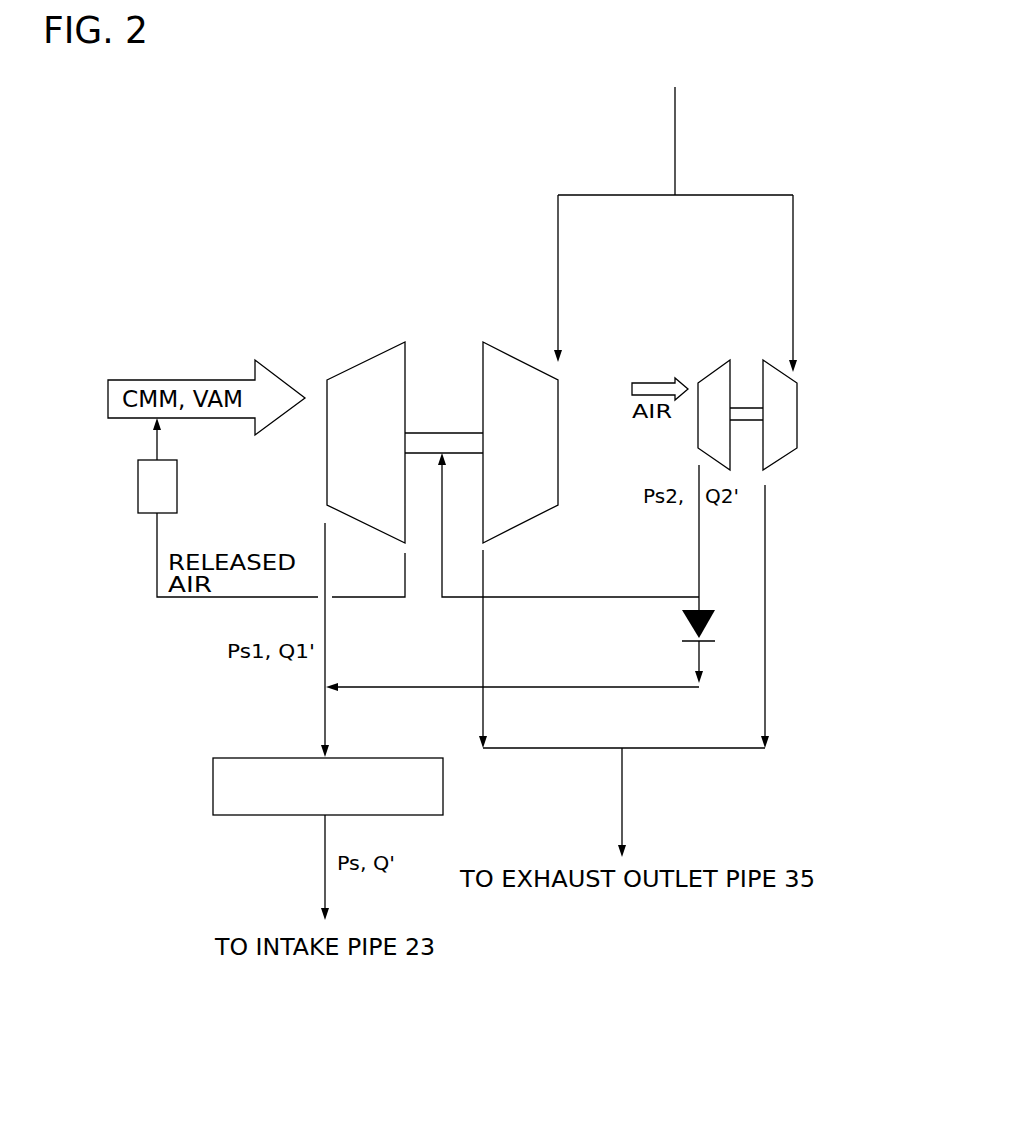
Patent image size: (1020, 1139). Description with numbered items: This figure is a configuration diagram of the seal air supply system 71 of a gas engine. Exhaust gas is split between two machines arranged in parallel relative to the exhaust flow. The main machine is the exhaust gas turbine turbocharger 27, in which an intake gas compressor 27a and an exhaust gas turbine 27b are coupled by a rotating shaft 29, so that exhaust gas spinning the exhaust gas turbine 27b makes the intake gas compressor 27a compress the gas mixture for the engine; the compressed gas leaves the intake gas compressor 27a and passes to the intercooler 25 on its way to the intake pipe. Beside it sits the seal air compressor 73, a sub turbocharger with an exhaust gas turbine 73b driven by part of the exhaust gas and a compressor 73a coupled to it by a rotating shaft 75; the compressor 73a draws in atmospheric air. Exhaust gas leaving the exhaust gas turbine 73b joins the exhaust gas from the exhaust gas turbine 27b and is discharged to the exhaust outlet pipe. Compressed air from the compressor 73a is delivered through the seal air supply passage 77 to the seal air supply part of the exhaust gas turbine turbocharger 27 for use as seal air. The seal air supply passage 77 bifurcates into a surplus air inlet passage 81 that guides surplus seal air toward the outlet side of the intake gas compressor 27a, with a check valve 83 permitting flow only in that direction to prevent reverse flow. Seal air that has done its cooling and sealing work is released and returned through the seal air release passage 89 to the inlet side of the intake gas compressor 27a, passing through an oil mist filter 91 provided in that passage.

The seal air supply system 71 is at (490, 193).
The exhaust gas turbine turbocharger 27 is at (430, 333).
The intake gas compressor 27a is at (362, 524).
The exhaust gas turbine 27b is at (530, 519).
The rotating shaft 29 is at (440, 432).
The seal air compressor 73 is at (812, 395).
The compressor 73a is at (697, 437).
The exhaust gas turbine 73b is at (785, 457).
The rotating shaft 75 is at (742, 408).
The seal air supply passage 77 is at (675, 595).
The check valve 83 is at (708, 610).
The surplus air inlet passage 81 is at (660, 690).
The seal air release passage 89 is at (370, 600).
The oil mist filter 91 is at (138, 490).
The intercooler 25 is at (443, 790).